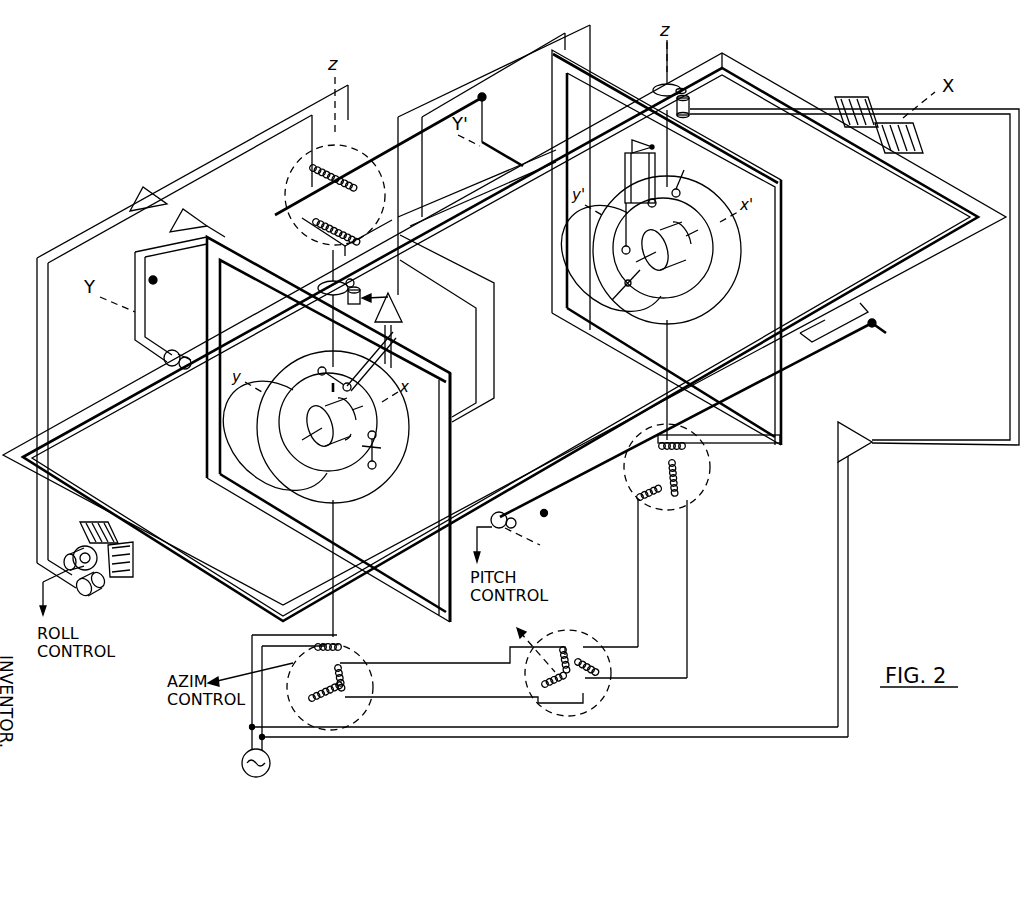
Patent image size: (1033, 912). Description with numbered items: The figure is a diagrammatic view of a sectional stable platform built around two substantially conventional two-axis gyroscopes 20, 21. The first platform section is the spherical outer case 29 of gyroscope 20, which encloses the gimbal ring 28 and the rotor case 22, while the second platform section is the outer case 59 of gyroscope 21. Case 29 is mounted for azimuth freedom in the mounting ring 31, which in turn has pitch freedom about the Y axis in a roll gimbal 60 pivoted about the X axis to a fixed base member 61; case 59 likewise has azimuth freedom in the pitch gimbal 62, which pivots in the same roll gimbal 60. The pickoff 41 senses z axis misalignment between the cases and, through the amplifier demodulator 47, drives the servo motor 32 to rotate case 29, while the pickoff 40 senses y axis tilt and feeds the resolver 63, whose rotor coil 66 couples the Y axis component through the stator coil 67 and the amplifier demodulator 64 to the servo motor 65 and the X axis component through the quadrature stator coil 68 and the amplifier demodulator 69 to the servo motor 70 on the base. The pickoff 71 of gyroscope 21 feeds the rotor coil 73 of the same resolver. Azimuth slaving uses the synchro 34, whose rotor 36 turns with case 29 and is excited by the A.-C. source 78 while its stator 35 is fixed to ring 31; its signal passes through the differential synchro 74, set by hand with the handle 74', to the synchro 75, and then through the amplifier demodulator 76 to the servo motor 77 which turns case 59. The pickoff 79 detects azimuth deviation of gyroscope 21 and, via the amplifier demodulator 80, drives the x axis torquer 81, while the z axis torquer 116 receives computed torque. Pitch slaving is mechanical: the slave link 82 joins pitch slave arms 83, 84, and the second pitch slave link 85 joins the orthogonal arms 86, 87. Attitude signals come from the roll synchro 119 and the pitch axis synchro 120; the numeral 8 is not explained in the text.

The gyroscope 8 is at (321, 423).
The two-axis gyroscope 20 is at (334, 469).
The two-axis gyroscope 21 is at (672, 295).
The rotor case 22 is at (365, 400).
The gimbal ring 28 is at (296, 385).
The outer case 29 is at (262, 440).
The mounting ring 31 is at (453, 459).
The servo motor 32 is at (358, 296).
The synchro 34 is at (362, 716).
The stator 35 is at (341, 683).
The rotor 36 is at (345, 648).
The pickoff 40 is at (375, 467).
The pickoff 41 is at (357, 362).
The amplifier demodulator 47 is at (428, 328).
The outer case 59 is at (720, 280).
The roll gimbal 60 is at (172, 546).
The base member 61 is at (115, 560).
The pitch gimbal 62 is at (782, 250).
The resolver 63 is at (364, 156).
The amplifier demodulator 64 is at (170, 224).
The servo motor 65 is at (175, 368).
The rotor coil 66 is at (292, 236).
The stator coil 67 is at (312, 165).
The stator coil 68 is at (316, 213).
The amplifier demodulator 69 is at (138, 195).
The servo motor 70 is at (90, 594).
The pickoff 71 is at (626, 288).
The rotor coil 73 is at (330, 252).
The differential synchro 74 is at (513, 673).
The handle 74' is at (550, 637).
The synchro 75 is at (700, 478).
The amplifier demodulator 76 is at (850, 452).
The servo motor 77 is at (692, 100).
The A.-C. source 78 is at (242, 762).
The pickoff 79 is at (644, 194).
The amplifier demodulator 80 is at (630, 150).
The x axis torquer 81 is at (622, 252).
The slave link 82 is at (560, 502).
The pitch slave arm 83 is at (530, 516).
The pitch slave arm 84 is at (826, 318).
The second pitch slave link 85 is at (425, 128).
The pitch slave arm 86 is at (146, 304).
The pitch slave arm 87 is at (486, 118).
The z axis torquer 116 is at (694, 172).
The roll synchro 119 is at (72, 556).
The pitch axis synchro 120 is at (494, 530).